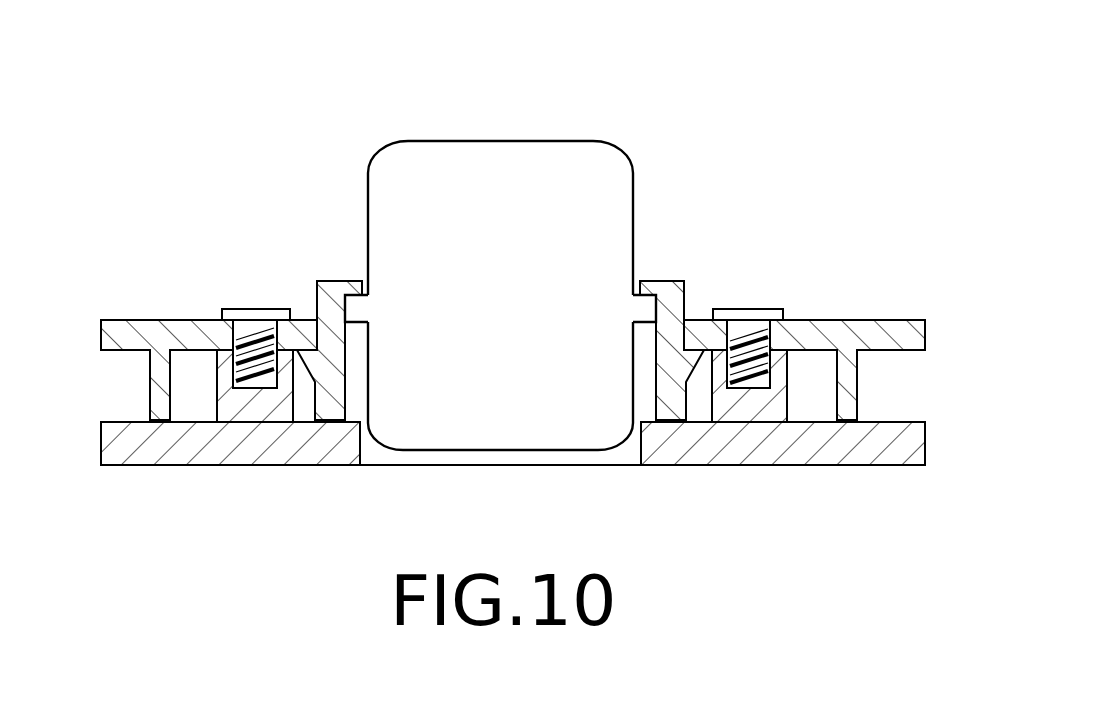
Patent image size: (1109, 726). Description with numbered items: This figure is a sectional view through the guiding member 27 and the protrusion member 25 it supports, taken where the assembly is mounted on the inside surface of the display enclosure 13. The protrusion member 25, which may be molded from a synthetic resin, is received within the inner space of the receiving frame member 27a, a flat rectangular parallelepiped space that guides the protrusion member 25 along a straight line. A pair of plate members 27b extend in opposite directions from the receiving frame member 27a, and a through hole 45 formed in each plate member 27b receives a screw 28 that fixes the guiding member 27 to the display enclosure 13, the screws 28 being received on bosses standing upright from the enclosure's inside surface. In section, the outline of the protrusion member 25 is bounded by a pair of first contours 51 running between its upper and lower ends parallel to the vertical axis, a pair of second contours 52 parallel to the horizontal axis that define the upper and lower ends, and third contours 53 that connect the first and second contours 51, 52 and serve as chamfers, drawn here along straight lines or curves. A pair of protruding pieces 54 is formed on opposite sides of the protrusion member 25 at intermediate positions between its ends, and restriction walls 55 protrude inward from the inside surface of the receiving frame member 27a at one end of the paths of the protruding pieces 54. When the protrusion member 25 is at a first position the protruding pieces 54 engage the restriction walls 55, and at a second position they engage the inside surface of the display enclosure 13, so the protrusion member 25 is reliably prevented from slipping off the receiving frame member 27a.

The display enclosure 13 is at (845, 465).
The protrusion member 25 is at (498, 282).
The guiding member 27 is at (518, 318).
The receiving frame member 27a is at (679, 281).
The plate member 27b is at (140, 320).
The screw 28 is at (508, 317).
The through hole 45 is at (240, 328).
The first contour 51 is at (367, 252).
The second contour 52 is at (514, 141).
The third contour 53 is at (378, 163).
The protruding piece 54 is at (367, 323).
The restriction wall 55 is at (363, 281).